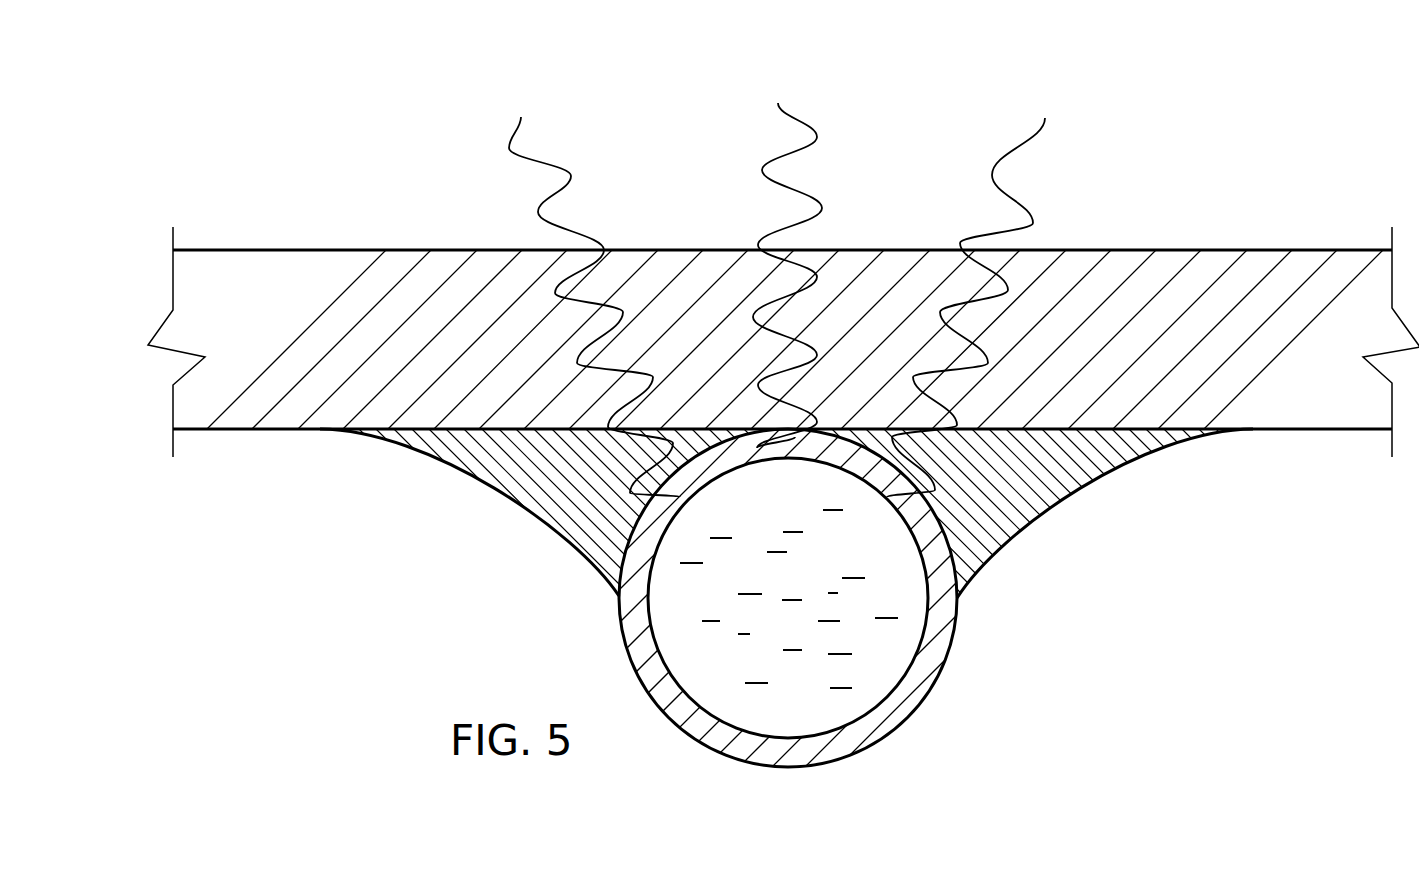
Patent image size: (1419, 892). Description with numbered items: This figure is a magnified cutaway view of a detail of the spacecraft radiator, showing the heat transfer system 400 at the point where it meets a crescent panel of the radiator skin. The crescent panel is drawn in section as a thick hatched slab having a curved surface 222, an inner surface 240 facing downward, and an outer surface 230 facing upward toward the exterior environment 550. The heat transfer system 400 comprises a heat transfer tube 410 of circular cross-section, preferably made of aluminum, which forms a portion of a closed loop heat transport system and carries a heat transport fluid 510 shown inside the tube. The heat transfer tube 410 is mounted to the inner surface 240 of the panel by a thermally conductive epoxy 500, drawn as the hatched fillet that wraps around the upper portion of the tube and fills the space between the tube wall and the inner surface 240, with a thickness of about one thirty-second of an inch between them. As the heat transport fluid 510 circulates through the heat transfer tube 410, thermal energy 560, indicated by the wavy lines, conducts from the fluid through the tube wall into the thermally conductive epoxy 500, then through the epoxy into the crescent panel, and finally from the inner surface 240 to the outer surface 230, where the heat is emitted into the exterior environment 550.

The outer surface 230 is at (1349, 250).
The inner surface 240 is at (1344, 430).
The curved surface 222 is at (262, 492).
The thermally conductive epoxy 500 is at (505, 472).
The heat transfer tube 410 is at (732, 758).
The heat transport fluid 510 is at (713, 642).
The thermal energy 560 is at (513, 130).
The exterior environment 550 is at (925, 144).
The heat transfer system 400 is at (1163, 712).